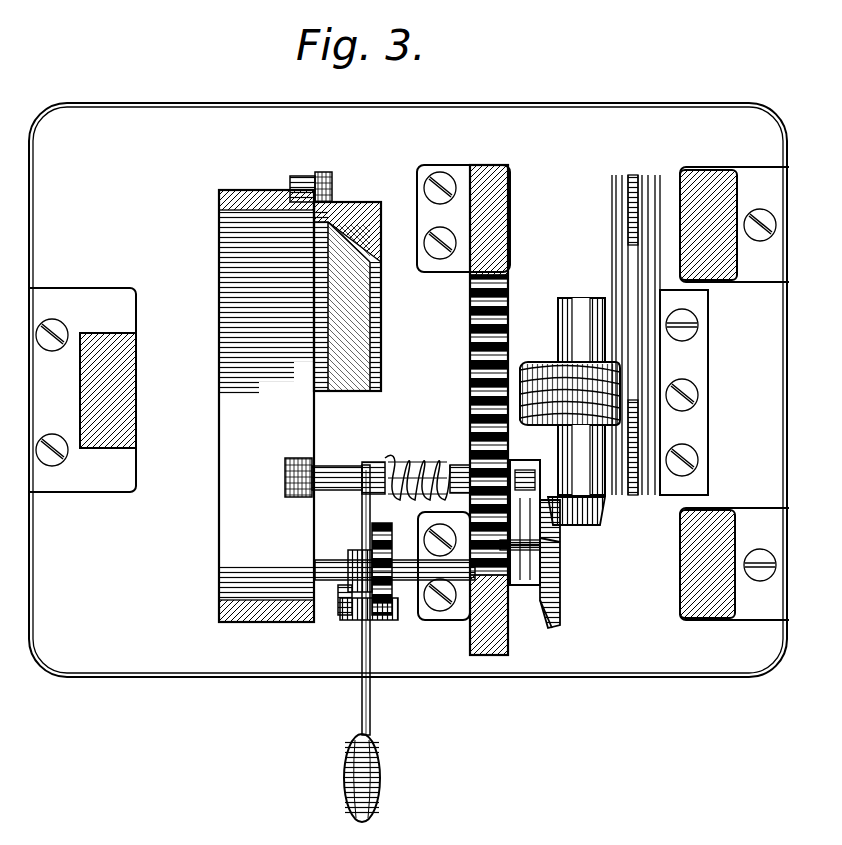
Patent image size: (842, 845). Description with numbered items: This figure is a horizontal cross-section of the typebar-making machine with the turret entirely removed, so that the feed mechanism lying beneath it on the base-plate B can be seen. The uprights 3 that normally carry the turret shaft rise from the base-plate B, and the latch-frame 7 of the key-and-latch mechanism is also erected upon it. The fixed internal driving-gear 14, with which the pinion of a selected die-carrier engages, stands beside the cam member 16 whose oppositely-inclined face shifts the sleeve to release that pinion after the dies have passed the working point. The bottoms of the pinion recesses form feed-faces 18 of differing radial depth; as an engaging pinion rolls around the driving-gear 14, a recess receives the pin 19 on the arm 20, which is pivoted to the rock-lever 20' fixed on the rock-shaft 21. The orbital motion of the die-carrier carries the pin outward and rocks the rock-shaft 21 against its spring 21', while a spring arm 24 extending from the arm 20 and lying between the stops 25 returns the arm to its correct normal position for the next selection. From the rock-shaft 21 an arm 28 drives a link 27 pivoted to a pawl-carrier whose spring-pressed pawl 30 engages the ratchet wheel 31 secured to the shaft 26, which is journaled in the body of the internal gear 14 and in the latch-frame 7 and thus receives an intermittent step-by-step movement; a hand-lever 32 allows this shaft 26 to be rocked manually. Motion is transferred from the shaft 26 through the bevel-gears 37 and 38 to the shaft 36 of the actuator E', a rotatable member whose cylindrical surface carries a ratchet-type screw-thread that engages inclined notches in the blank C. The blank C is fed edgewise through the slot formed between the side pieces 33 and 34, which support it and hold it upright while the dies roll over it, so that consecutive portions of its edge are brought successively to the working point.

The upright 3 is at (137, 430).
The latch-frame 7 is at (277, 622).
The cam member 16 is at (381, 268).
The driving-gear 14 is at (478, 360).
The pin 19 is at (472, 520).
The spring-pressed pawl 30 is at (400, 620).
The rock-shaft 21 is at (377, 461).
The spring 21' is at (406, 463).
The arm 28 is at (362, 530).
The hand-lever 32 is at (380, 792).
The ratchet wheel 31 is at (388, 522).
The shaft 26 is at (348, 615).
The link 27 is at (370, 620).
The stops 25 is at (530, 480).
The feed-face 18 is at (540, 545).
The shaft 36 is at (560, 298).
The actuator E' is at (570, 380).
The spring arm 24 is at (575, 492).
The bevel-gear 37 is at (605, 505).
The arm 20 is at (567, 564).
The rock-lever 20' is at (590, 531).
The bevel-gear 38 is at (556, 606).
The side piece 34 is at (628, 290).
The side piece 33 is at (646, 370).
The base-plate B is at (547, 240).
The blank C is at (592, 265).